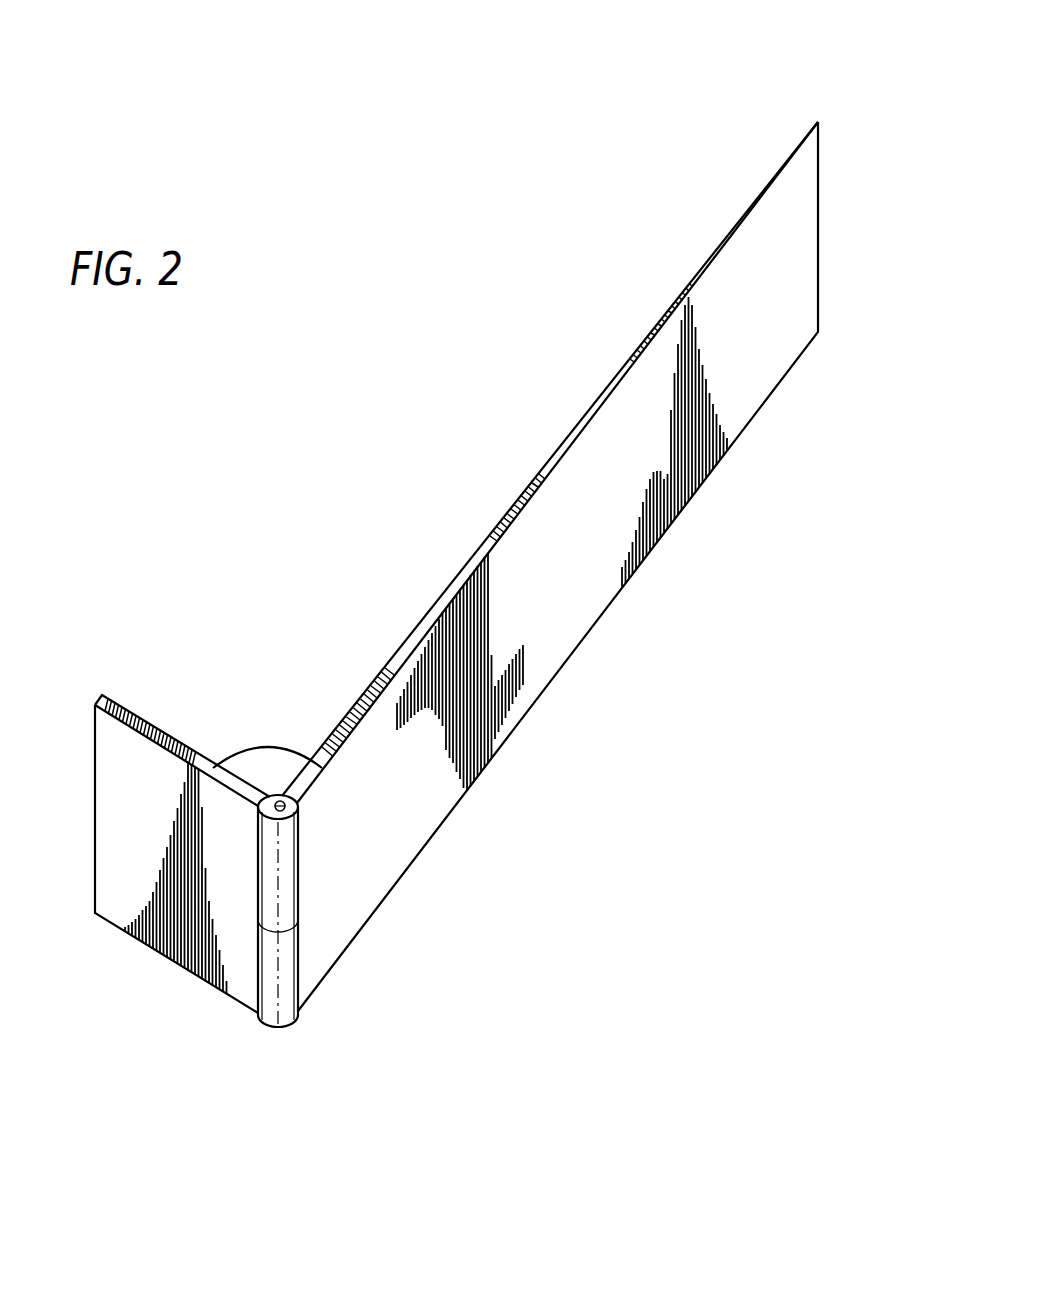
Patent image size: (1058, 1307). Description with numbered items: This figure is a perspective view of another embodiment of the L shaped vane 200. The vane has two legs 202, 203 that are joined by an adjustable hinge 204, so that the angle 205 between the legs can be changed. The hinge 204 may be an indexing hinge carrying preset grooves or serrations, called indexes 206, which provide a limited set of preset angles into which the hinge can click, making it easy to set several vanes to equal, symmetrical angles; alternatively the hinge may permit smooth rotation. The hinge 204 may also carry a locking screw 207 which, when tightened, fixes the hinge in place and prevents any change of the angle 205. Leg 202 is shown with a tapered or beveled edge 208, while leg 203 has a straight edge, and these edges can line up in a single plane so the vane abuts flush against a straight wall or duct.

The L shaped vane 200 is at (425, 258).
The leg 202 is at (608, 503).
The leg 203 is at (132, 880).
The adjustable hinge 204 is at (278, 1028).
The angle 205 is at (266, 748).
The preset grooves or serrations (indexes) 206 is at (308, 917).
The locking screw 207 is at (285, 804).
The tapered or beveled edge 208 is at (798, 137).